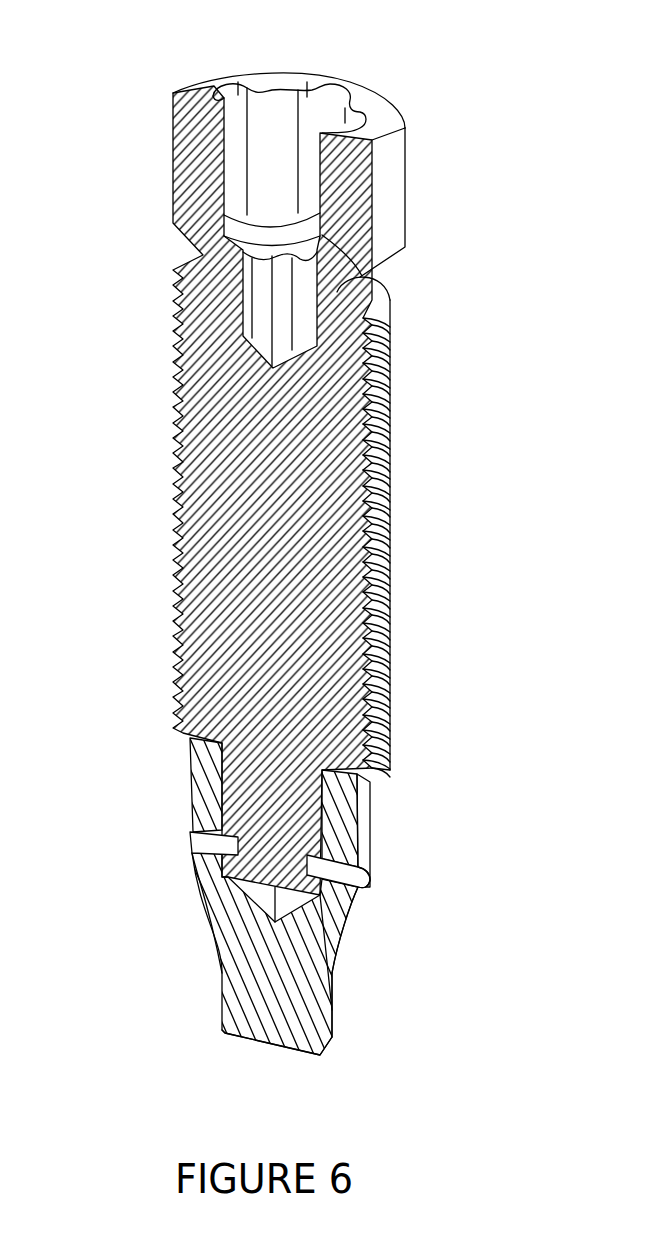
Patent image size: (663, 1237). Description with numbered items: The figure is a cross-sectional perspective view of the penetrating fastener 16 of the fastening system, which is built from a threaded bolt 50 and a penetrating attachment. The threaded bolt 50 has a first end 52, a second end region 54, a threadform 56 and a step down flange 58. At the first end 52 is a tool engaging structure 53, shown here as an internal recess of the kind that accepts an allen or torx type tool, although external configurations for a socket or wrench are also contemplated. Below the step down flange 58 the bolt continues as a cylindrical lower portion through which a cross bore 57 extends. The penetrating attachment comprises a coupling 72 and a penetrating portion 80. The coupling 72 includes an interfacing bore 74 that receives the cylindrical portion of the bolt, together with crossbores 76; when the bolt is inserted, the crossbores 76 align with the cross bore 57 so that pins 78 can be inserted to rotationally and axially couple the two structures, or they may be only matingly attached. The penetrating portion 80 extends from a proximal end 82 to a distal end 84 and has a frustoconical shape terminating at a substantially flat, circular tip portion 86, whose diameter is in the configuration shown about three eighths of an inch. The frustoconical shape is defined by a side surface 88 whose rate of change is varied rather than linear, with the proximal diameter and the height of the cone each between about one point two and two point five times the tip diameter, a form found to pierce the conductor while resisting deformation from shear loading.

The penetrating fastener 16 is at (106, 443).
The threaded bolt 50 is at (428, 350).
The first end 52 is at (428, 187).
The tool engaging structure 53 is at (316, 62).
The second end region 54 is at (118, 848).
The threadform 56 is at (390, 437).
The cross bore 57 is at (358, 863).
The step down flange 58 is at (390, 735).
The coupling 72 is at (170, 757).
The interfacing bore 74 is at (330, 797).
The crossbores 76 is at (207, 827).
The pins 78 is at (358, 877).
The penetrating portion 80 is at (192, 995).
The proximal end 82 is at (168, 882).
The distal end 84 is at (350, 1037).
The tip portion 86 is at (275, 1055).
The side surface 88 is at (350, 970).